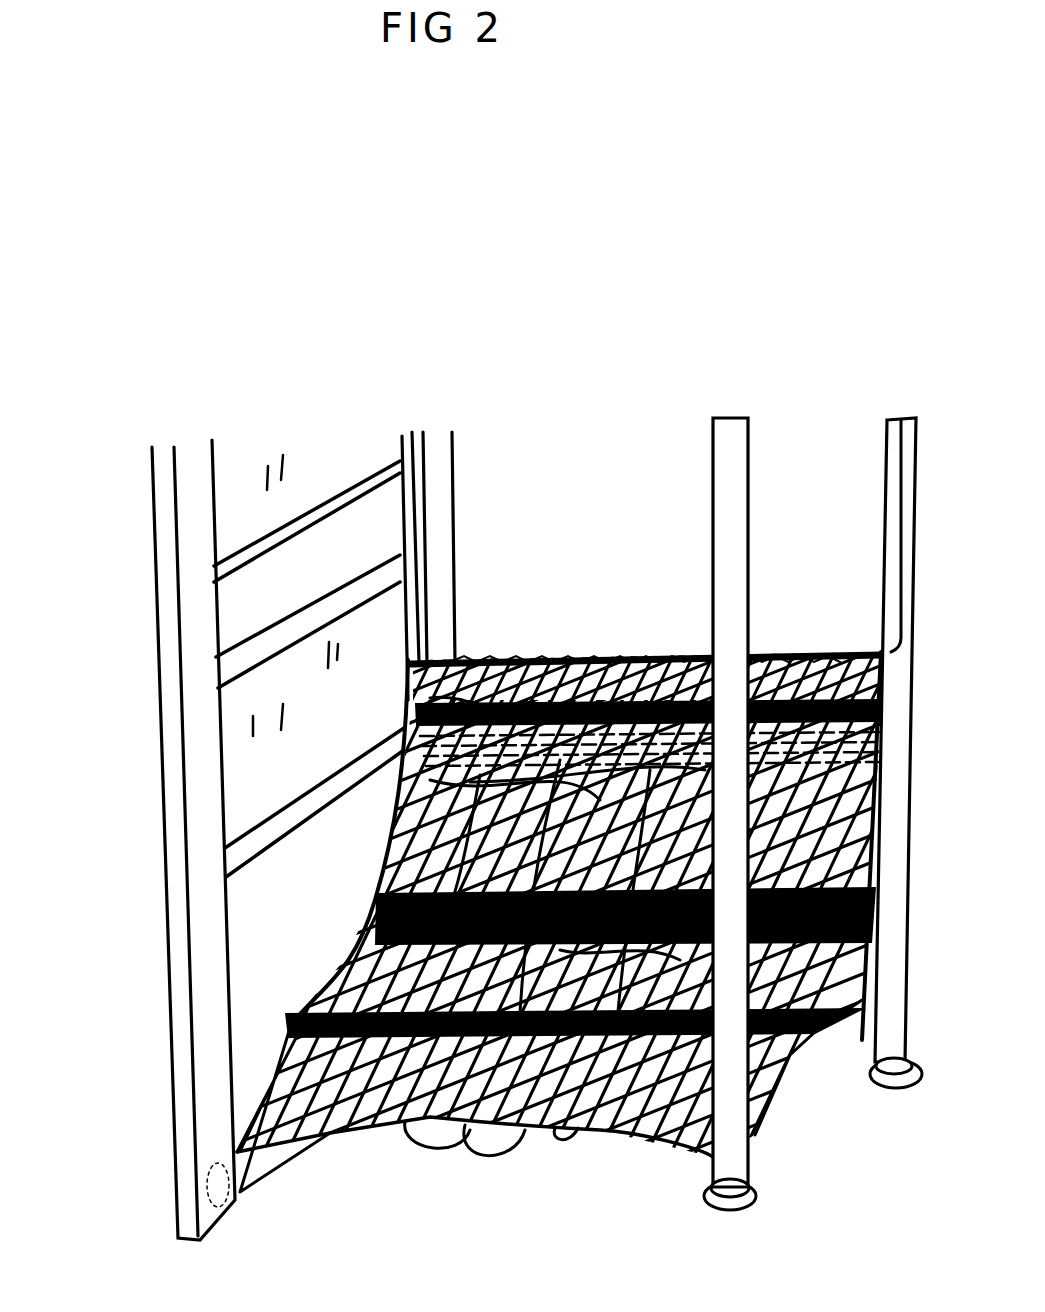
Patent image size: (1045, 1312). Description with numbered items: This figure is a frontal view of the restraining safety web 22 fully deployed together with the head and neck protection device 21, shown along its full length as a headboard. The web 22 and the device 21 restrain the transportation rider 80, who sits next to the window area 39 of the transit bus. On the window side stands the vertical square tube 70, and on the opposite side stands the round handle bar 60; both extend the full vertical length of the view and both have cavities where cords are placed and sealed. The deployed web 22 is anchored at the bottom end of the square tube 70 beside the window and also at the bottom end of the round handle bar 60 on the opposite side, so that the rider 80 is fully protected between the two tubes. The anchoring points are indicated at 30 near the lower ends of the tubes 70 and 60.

The square tube 70 is at (138, 470).
The window area 39 is at (312, 478).
The round handle bar 60 is at (880, 438).
The head and neck protection device 21 is at (787, 655).
The restraining web 22 is at (615, 1137).
The rider 80 is at (378, 866).
The post feet 30 is at (205, 1197).